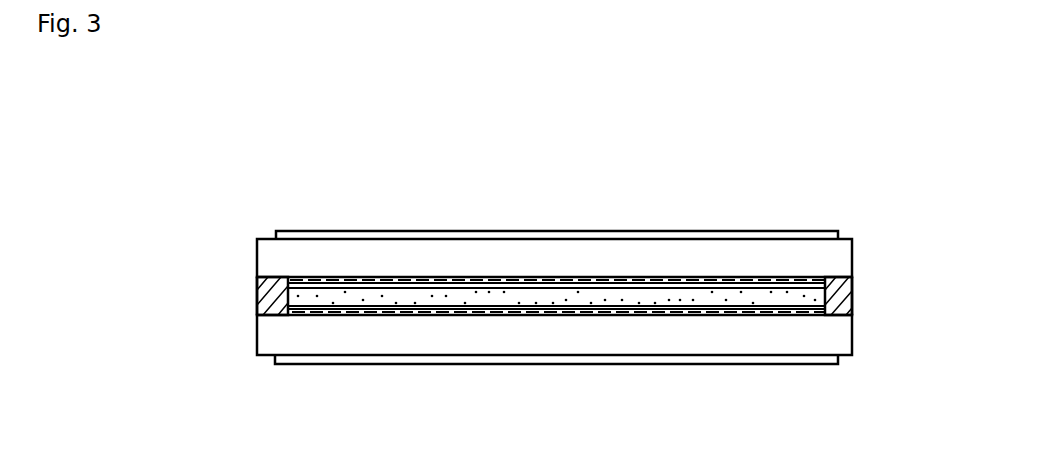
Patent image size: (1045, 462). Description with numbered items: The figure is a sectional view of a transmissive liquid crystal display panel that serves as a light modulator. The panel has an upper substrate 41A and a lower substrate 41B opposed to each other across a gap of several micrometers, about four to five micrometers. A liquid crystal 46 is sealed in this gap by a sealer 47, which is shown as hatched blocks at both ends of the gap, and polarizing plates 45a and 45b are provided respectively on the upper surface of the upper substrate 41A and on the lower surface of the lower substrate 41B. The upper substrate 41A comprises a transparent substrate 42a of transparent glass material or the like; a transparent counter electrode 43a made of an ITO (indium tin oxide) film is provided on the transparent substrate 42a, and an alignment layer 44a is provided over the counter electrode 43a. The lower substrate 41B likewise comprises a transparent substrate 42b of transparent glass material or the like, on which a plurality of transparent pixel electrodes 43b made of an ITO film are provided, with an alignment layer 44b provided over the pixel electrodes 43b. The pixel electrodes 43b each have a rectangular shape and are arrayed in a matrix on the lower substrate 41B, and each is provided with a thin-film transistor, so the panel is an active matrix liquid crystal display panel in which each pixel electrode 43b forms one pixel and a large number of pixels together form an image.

The upper substrate 41A is at (257, 254).
The lower substrate 41B is at (257, 336).
The transparent substrate 42a is at (351, 263).
The transparent substrate 42b is at (340, 337).
The counter electrode 43a is at (443, 283).
The pixel electrodes 43b is at (422, 317).
The alignment layer 44a is at (533, 288).
The alignment layer 44b is at (516, 306).
The polarizing plate 45a is at (626, 231).
The polarizing plate 45b is at (606, 364).
The liquid crystal 46 is at (728, 300).
The sealer 47 is at (257, 300).